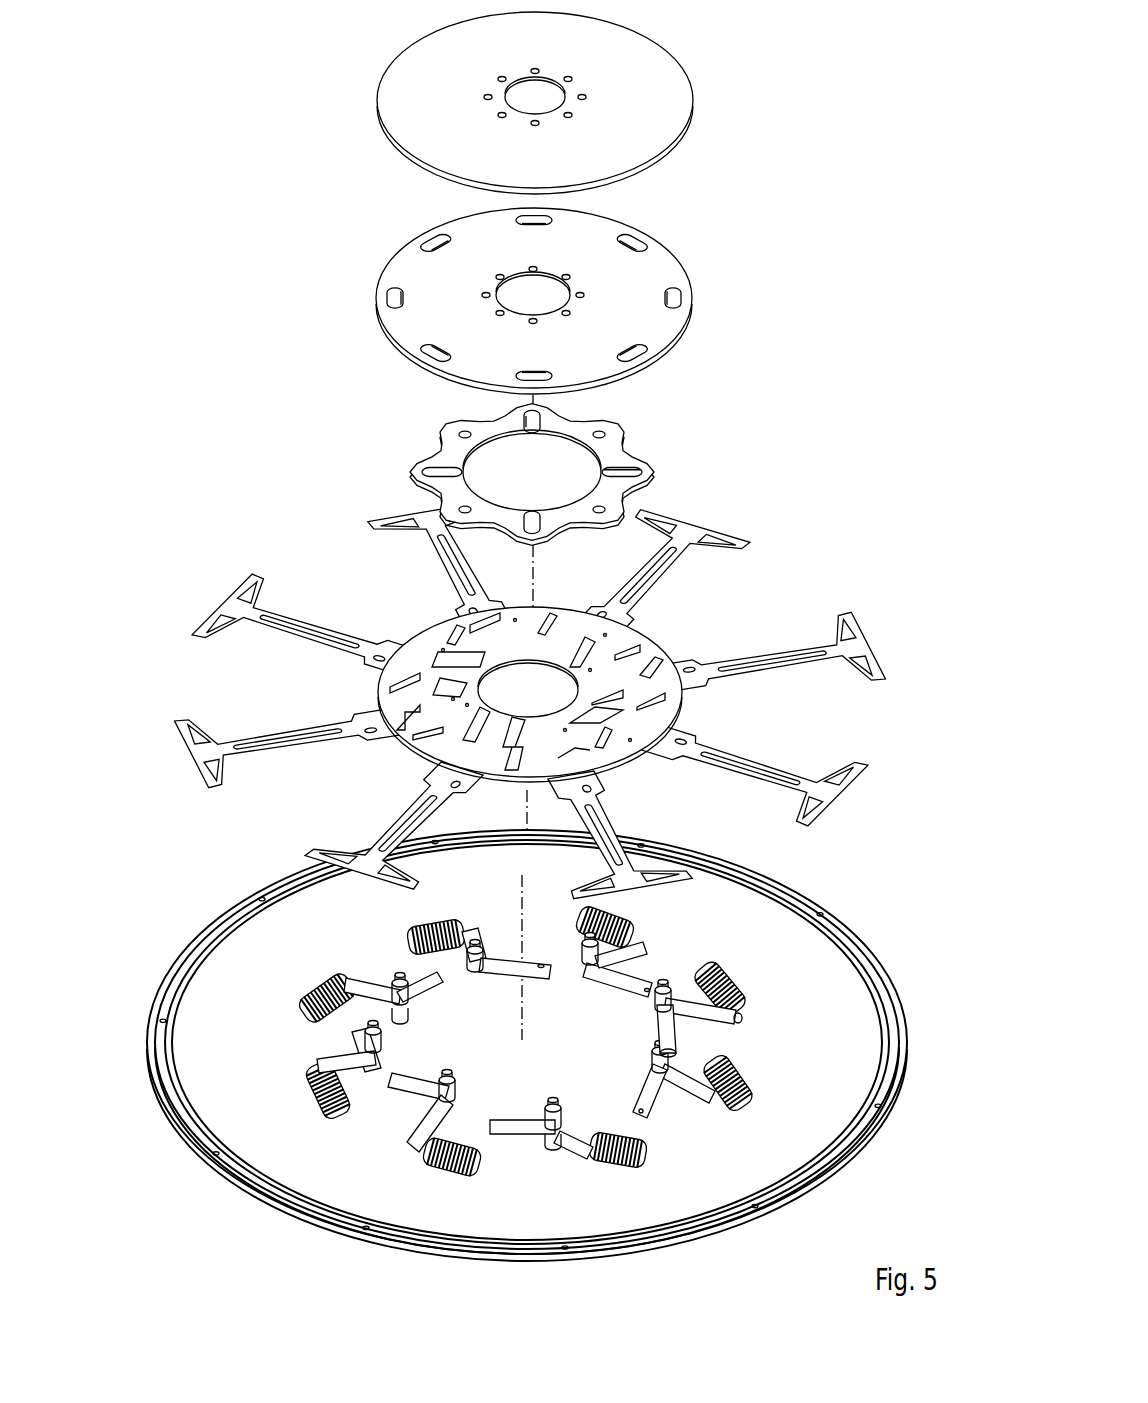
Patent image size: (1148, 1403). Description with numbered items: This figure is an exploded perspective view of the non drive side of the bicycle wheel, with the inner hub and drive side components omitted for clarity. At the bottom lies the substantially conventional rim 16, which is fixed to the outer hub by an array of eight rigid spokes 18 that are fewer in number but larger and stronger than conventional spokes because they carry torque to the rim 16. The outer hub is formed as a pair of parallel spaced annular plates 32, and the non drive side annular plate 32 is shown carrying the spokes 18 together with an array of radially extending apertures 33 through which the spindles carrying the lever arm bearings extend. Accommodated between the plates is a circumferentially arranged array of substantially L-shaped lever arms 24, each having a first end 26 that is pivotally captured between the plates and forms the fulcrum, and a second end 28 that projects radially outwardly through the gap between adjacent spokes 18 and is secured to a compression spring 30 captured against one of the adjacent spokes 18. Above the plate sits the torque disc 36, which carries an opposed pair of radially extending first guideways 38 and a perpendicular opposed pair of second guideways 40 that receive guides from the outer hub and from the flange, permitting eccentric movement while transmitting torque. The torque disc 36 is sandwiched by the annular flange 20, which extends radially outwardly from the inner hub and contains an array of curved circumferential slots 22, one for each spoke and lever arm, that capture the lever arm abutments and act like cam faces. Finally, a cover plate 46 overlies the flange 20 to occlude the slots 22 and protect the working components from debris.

The rim 16 is at (160, 1045).
The spokes 18 is at (225, 735).
The annular flange 20 is at (665, 262).
The slot 22 is at (673, 296).
The lever arm 24 is at (697, 1027).
The first end 26 is at (650, 1118).
The second end 28 is at (718, 1020).
The compression spring 30 is at (735, 985).
The annular plate 32 is at (418, 638).
The apertures 33 is at (623, 641).
The torque disc 36 is at (611, 446).
The first guideways 38 is at (650, 468).
The second guideways 40 is at (535, 422).
The cover plate 46 is at (672, 120).